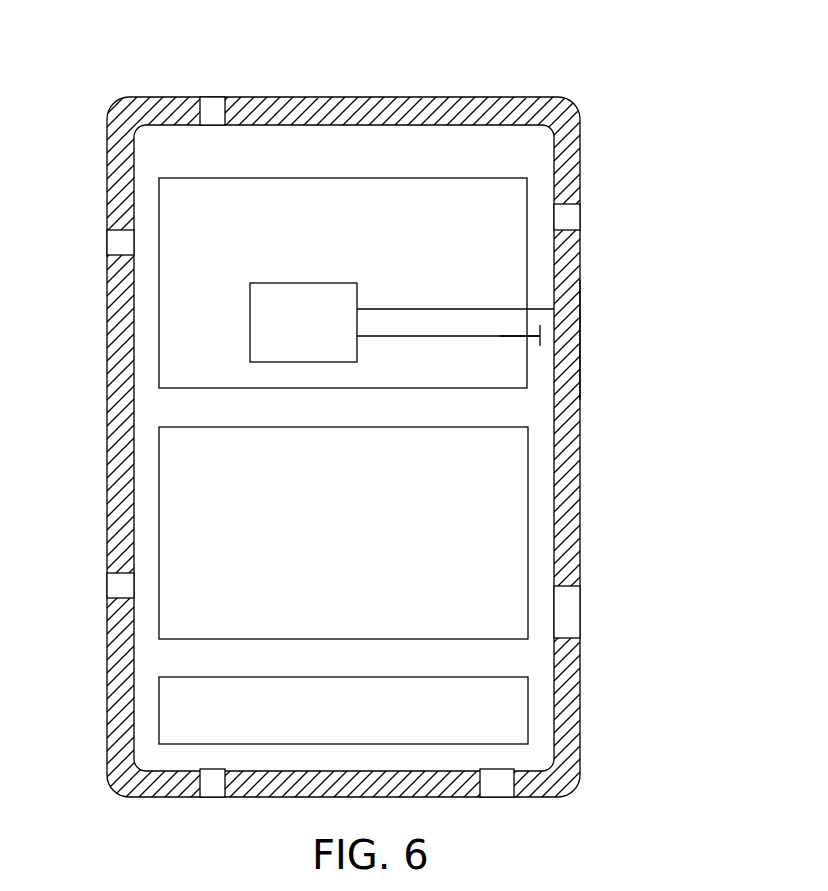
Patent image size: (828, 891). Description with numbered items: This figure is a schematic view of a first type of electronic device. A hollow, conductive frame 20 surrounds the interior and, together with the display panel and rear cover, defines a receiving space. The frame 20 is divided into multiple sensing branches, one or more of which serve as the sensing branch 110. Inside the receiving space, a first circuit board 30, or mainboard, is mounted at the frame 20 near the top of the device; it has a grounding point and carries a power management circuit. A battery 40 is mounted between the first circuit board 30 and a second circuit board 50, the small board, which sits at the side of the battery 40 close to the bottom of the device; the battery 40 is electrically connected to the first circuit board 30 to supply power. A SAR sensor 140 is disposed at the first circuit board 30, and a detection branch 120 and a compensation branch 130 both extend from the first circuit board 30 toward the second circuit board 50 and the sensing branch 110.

The frame 20 is at (406, 97).
The first circuit board 30 is at (475, 217).
The battery 40 is at (497, 522).
The second circuit board 50 is at (515, 703).
The sensing branch 110 is at (580, 330).
The detection branch 120 is at (472, 309).
The compensation branch 130 is at (487, 337).
The SAR sensor 140 is at (250, 323).